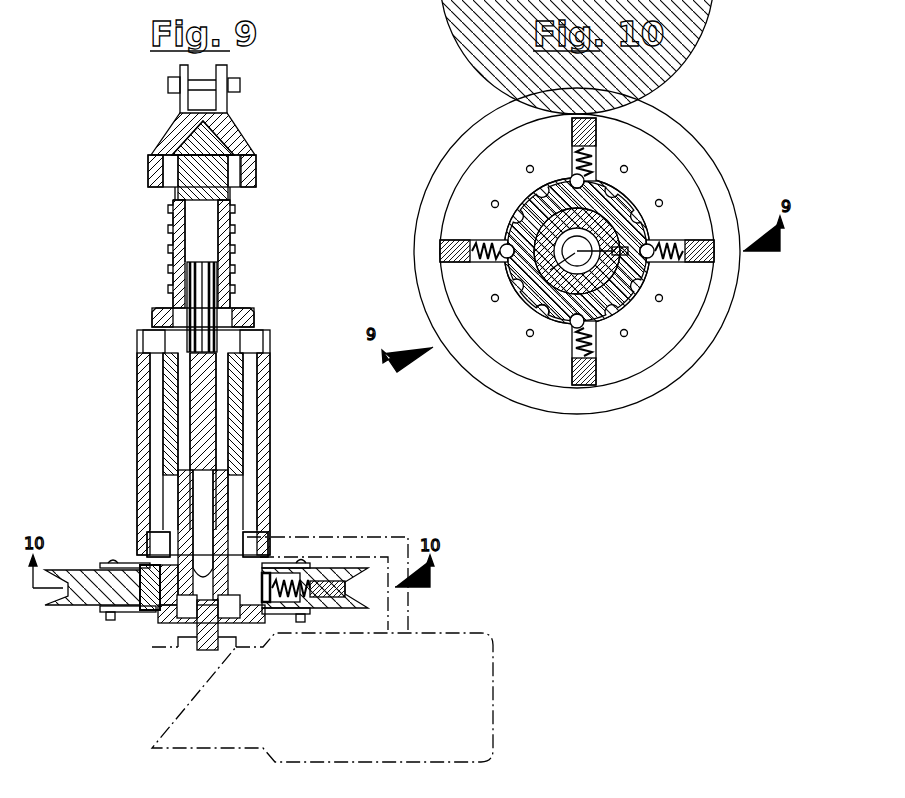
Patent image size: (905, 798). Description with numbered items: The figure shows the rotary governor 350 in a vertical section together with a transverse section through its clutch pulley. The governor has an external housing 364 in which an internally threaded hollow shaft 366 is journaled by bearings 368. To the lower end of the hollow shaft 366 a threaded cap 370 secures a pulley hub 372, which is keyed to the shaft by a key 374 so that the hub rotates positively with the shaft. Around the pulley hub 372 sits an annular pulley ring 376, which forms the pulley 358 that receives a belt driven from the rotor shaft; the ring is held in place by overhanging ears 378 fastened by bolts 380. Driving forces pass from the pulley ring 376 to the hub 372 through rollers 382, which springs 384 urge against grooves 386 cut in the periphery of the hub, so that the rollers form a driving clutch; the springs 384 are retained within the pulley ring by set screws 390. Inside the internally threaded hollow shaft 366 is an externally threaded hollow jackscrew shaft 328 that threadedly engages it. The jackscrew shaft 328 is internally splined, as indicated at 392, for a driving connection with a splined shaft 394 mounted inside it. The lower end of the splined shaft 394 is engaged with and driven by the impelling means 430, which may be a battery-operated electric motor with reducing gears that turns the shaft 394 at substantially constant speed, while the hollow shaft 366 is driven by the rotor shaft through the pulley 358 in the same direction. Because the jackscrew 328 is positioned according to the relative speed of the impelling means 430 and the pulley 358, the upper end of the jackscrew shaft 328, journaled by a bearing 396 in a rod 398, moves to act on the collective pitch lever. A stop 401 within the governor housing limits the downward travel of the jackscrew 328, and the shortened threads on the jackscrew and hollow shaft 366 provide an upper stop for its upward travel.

In FIG. 9, the jackscrew shaft 328 is at (231, 215).
In FIG. 9, the governor 350 is at (290, 479).
In FIG. 9, the pulley 358 is at (352, 608).
In FIG. 9, the external housing 364 is at (271, 398).
In FIG. 9, the internally threaded hollow shaft 366 is at (170, 543).
In FIG. 9, the bearings 368 is at (252, 330).
In FIG. 9, the threaded cap 370 is at (158, 624).
In FIG. 9, the pulley hub 372 is at (143, 570).
In FIG. 10, the pulley hub 372 is at (613, 208).
In FIG. 9, the key 374 is at (241, 633).
In FIG. 10, the key 374 is at (624, 238).
In FIG. 9, the annular pulley ring 376 is at (351, 565).
In FIG. 10, the annular pulley ring 376 is at (692, 318).
In FIG. 9, the overhanging ears 378 is at (279, 568).
In FIG. 9, the bolts 380 is at (308, 557).
In FIG. 10, the rollers 382 is at (593, 326).
In FIG. 10, the springs 384 is at (562, 350).
In FIG. 10, the grooves 386 is at (553, 318).
In FIG. 10, the set screws 390 is at (580, 389).
In FIG. 9, the internal splines 392 is at (193, 271).
In FIG. 9, the splined shaft 394 is at (170, 508).
In FIG. 9, the bearing 396 is at (233, 165).
In FIG. 9, the rod 398 is at (223, 106).
In FIG. 9, the stop 401 is at (186, 600).
In FIG. 9, the impelling means 430 is at (494, 690).